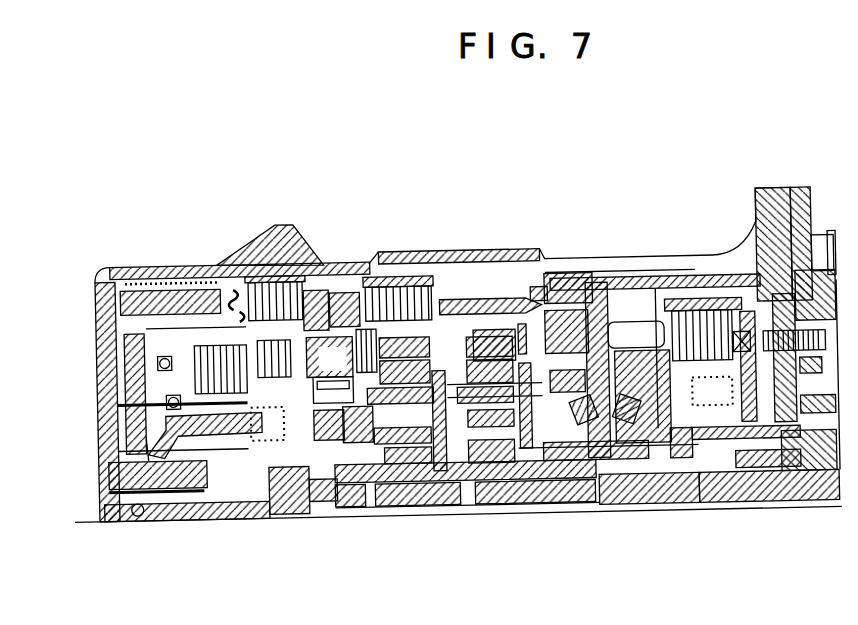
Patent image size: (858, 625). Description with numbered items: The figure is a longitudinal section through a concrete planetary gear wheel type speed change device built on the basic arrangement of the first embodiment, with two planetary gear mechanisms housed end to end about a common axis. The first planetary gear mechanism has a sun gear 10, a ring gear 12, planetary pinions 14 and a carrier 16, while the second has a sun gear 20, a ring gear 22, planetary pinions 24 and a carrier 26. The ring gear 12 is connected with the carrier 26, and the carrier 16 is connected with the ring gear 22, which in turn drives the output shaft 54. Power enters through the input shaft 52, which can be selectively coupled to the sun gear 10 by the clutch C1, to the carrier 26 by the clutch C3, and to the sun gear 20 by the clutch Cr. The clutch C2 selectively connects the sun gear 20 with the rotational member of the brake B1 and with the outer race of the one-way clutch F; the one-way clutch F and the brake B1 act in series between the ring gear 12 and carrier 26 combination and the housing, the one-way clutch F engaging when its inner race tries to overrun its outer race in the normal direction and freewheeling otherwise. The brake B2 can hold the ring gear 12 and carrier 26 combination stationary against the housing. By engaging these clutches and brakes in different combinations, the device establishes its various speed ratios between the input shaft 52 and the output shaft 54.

The brake B1 is at (168, 302).
The clutch C3 is at (202, 344).
The clutch Cr is at (242, 292).
The clutch C2 is at (308, 271).
The one-way clutch F is at (343, 296).
The brake B2 is at (399, 283).
The ring gear 22 is at (447, 317).
The ring gear 12 is at (492, 353).
The planetary pinions 14 is at (524, 339).
The carrier 16 is at (559, 342).
The clutch C1 is at (702, 318).
The planetary pinions 24 is at (372, 456).
The sun gear 20 is at (401, 463).
The sun gear 10 is at (468, 465).
The output shaft 54 is at (589, 477).
The input shaft 52 is at (681, 502).
The carrier 26 is at (329, 357).